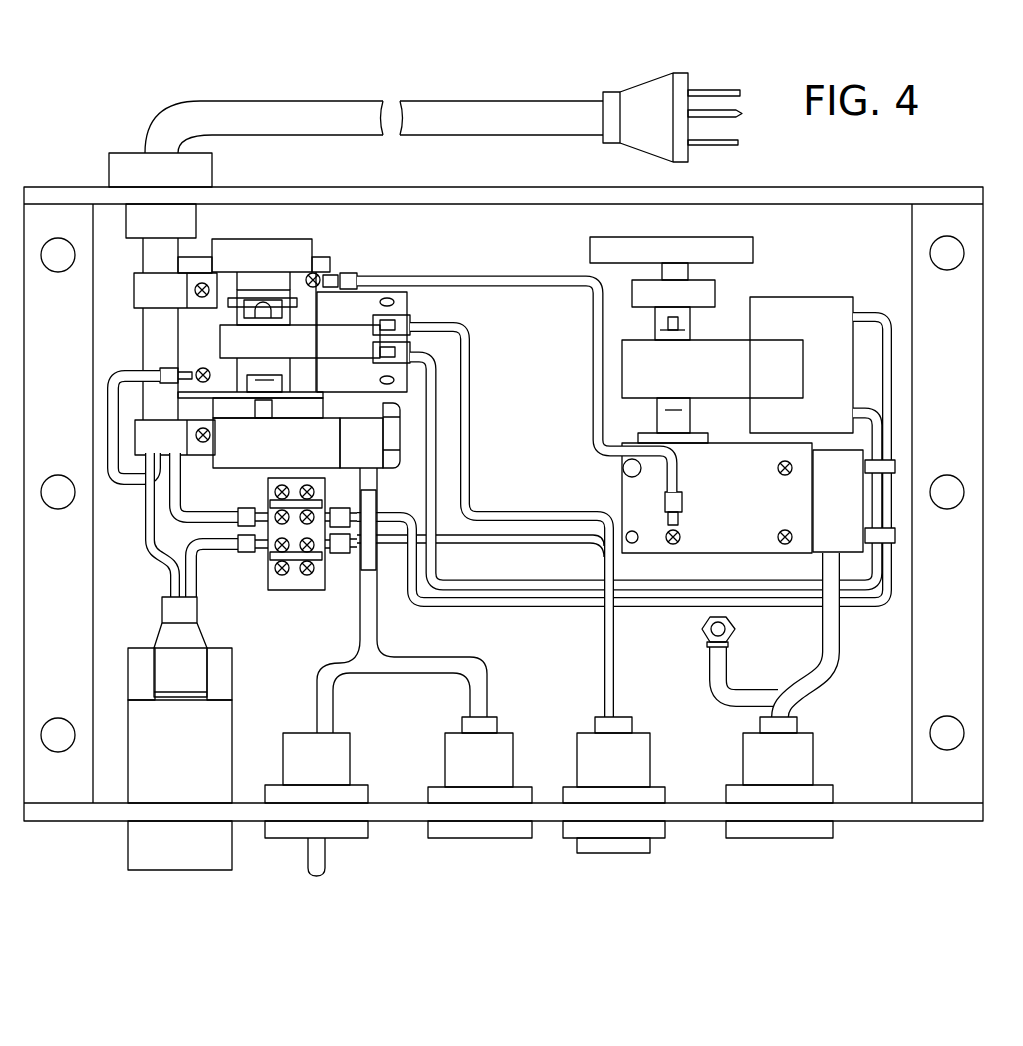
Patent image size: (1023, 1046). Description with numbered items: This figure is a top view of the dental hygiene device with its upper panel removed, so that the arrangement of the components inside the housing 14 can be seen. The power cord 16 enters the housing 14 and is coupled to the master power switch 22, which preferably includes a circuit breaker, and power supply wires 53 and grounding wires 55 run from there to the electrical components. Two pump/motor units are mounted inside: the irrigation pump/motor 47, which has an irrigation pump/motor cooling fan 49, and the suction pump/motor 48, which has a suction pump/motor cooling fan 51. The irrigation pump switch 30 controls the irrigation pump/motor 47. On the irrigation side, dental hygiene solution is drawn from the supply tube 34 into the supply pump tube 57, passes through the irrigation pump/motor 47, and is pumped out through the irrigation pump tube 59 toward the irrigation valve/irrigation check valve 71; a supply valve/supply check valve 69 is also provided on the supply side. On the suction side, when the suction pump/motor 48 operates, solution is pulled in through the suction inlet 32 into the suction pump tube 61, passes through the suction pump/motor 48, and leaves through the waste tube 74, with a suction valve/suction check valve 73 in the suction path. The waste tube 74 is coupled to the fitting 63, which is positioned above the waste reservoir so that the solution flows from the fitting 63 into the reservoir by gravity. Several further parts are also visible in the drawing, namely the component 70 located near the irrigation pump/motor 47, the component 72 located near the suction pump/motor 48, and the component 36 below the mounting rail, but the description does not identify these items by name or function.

The housing 14 is at (985, 466).
The power cord 16 is at (478, 98).
The master power switch 22 is at (164, 759).
The irrigation pump switch 30 is at (596, 776).
The suction inlet 32 is at (833, 833).
The supply tube 34 is at (328, 880).
The mounting block 36 is at (372, 826).
The irrigation pump/motor 47 is at (284, 356).
The suction pump/motor 48 is at (696, 382).
The irrigation pump/motor cooling fan 49 is at (297, 226).
The suction pump/motor cooling fan 51 is at (590, 250).
The power supply wires 53 is at (471, 426).
The grounding wires 55 is at (525, 287).
The supply pump tube 57 is at (350, 612).
The irrigation pump tube 59 is at (488, 703).
The suction pump tube 61 is at (822, 646).
The fitting 63 is at (702, 622).
The supply valve/supply check valve 69 is at (299, 774).
The valve body 70 is at (256, 457).
The irrigation valve/irrigation check valve 71 is at (464, 776).
The control box 72 is at (714, 524).
The suction valve/suction check valve 73 is at (762, 776).
The waste tube 74 is at (712, 697).